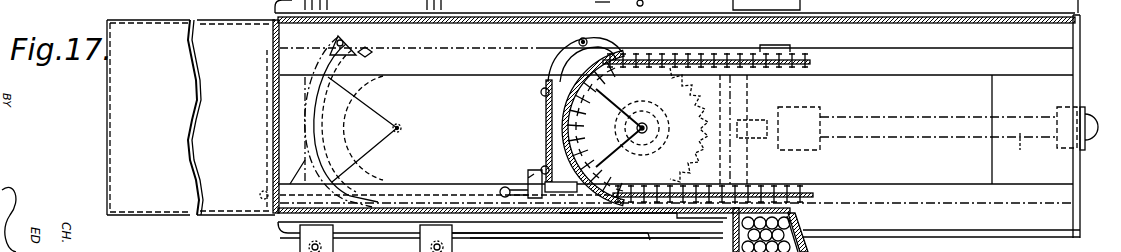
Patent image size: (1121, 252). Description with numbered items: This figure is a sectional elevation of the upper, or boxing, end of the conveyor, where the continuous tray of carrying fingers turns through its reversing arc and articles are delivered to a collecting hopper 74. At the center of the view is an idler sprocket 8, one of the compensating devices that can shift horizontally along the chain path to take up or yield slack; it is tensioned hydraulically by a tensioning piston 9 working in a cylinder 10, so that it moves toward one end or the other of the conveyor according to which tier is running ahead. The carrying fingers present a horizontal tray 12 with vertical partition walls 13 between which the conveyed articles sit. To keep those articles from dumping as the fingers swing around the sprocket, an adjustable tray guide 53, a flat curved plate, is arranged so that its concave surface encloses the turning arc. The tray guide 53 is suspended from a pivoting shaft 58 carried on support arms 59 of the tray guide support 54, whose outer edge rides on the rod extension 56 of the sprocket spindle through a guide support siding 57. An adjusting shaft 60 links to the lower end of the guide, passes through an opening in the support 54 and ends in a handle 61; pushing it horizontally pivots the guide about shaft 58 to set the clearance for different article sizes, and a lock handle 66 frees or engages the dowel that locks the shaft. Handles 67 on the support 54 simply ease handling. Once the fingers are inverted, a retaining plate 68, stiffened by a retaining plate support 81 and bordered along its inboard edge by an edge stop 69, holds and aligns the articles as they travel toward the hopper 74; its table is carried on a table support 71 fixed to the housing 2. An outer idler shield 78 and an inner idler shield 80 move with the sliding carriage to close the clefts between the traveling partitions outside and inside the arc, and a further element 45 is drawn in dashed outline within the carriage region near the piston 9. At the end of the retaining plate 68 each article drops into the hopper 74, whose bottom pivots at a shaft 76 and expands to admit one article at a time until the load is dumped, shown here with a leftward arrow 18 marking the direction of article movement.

The housing 2 is at (912, 20).
The idler sprocket 8 is at (689, 125).
The tensioning piston 9 is at (745, 129).
The cylinder 10 is at (1045, 129).
The horizontal tray 12 is at (790, 185).
The vertical partition walls 13 is at (775, 45).
The curved guide 18 is at (415, 174).
The slide block 45 is at (738, 92).
The tray guide 53 is at (626, 52).
The tray guide support 54 is at (547, 117).
The rod extension 56 is at (647, 128).
The guide support siding 57 is at (594, 6).
The pivoting shaft 58 is at (588, 41).
The support arms 59 is at (572, 50).
The adjusting shaft 60 is at (530, 176).
The handle 61 is at (502, 190).
The lock handle 66 is at (506, 242).
The handles 67 is at (543, 168).
The retaining plate 68 is at (705, 216).
The edge stop 69 is at (490, 208).
The table support 71 is at (430, 247).
The collecting hopper 74 is at (812, 240).
The shaft 76 is at (502, 232).
The outer idler shield 78 is at (267, 77).
The inner idler shield 80 is at (945, 185).
The retaining plate support 81 is at (656, 218).